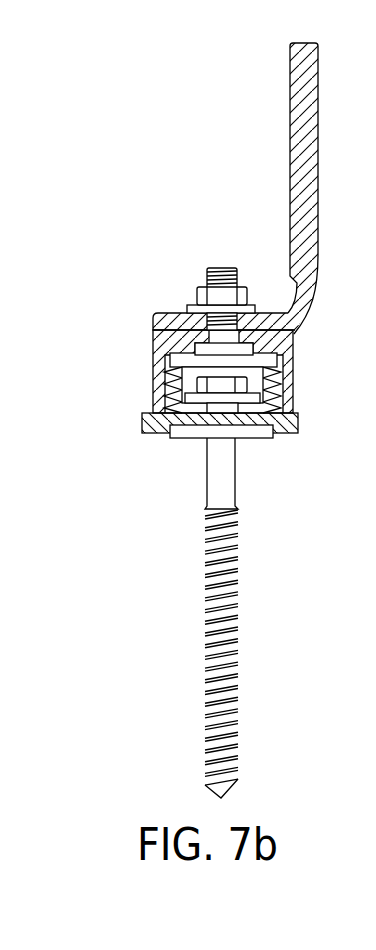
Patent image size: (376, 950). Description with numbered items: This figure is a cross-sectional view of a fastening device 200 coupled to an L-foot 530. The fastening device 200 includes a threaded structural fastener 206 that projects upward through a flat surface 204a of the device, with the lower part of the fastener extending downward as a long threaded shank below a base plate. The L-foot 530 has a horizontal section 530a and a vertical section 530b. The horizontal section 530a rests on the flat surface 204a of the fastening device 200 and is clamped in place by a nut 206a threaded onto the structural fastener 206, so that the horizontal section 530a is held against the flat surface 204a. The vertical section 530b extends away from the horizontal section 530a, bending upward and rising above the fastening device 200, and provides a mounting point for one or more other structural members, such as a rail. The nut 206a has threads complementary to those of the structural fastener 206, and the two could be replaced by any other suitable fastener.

The fastening device 200 is at (130, 432).
The flat surface 204a is at (153, 346).
The structural fastener 206 is at (220, 265).
The nut 206a is at (196, 297).
The L-foot 530 is at (213, 225).
The horizontal section 530a is at (167, 309).
The vertical section 530b is at (298, 102).